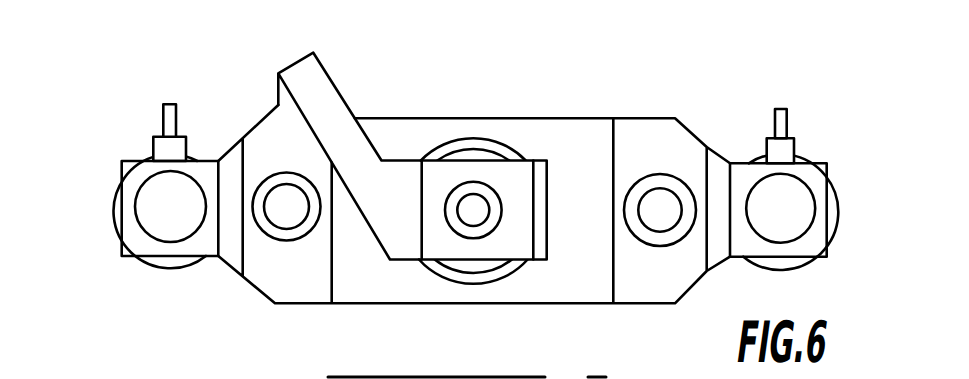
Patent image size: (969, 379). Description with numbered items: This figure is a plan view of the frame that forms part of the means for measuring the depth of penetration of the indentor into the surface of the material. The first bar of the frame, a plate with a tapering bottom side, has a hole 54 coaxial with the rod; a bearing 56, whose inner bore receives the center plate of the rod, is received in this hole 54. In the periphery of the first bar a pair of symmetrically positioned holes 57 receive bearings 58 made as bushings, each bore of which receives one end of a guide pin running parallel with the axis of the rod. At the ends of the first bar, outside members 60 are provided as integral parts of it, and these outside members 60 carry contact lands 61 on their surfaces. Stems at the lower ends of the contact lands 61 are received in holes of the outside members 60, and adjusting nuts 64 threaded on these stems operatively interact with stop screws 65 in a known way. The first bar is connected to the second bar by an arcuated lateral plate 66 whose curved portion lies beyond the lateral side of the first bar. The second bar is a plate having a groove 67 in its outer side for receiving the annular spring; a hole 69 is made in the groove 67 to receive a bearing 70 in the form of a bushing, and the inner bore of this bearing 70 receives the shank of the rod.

The hole 54 is at (457, 145).
The bearing 56 is at (477, 146).
The holes 57 is at (266, 177).
The bearings 58 is at (287, 180).
The outside members 60 is at (230, 273).
The contact lands 61 is at (156, 197).
The adjusting nuts 64 is at (112, 218).
The stop screws 65 is at (170, 104).
The arcuated lateral plate 66 is at (318, 85).
The groove 67 is at (520, 180).
The hole 69 is at (455, 235).
The bearing 70 is at (480, 230).